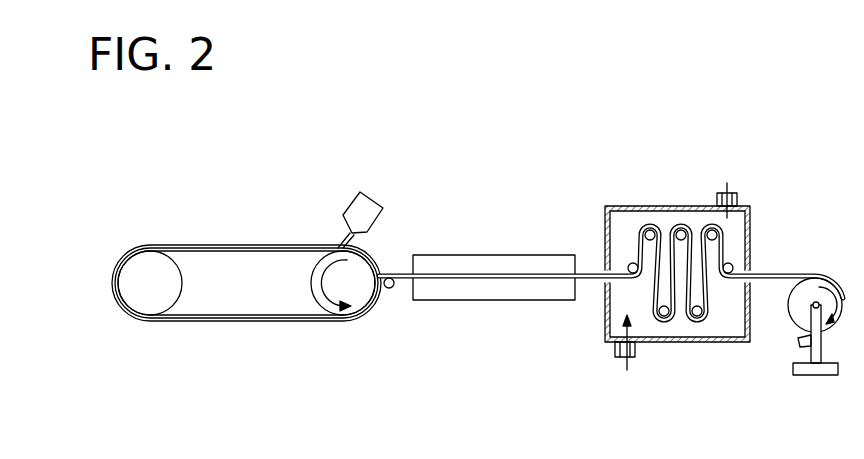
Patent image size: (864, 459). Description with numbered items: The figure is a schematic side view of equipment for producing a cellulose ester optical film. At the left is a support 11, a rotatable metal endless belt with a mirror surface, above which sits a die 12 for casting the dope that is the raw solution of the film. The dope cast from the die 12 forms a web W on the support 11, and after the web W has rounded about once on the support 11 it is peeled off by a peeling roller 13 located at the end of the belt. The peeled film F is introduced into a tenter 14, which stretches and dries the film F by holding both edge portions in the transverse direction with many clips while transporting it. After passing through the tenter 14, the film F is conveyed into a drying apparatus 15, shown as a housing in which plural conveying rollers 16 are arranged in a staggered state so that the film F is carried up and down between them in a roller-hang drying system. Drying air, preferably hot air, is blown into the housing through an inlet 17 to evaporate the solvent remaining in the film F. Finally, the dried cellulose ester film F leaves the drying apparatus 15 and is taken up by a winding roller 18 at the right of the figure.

The web W is at (172, 251).
The support 11 is at (247, 246).
The die 12 is at (348, 193).
The peeling roller 13 is at (390, 290).
The tenter 14 is at (492, 255).
The film F is at (493, 280).
The drying apparatus 15 is at (620, 206).
The conveying rollers 16 is at (712, 230).
The inlet 17 is at (635, 351).
The winding roller 18 is at (822, 283).